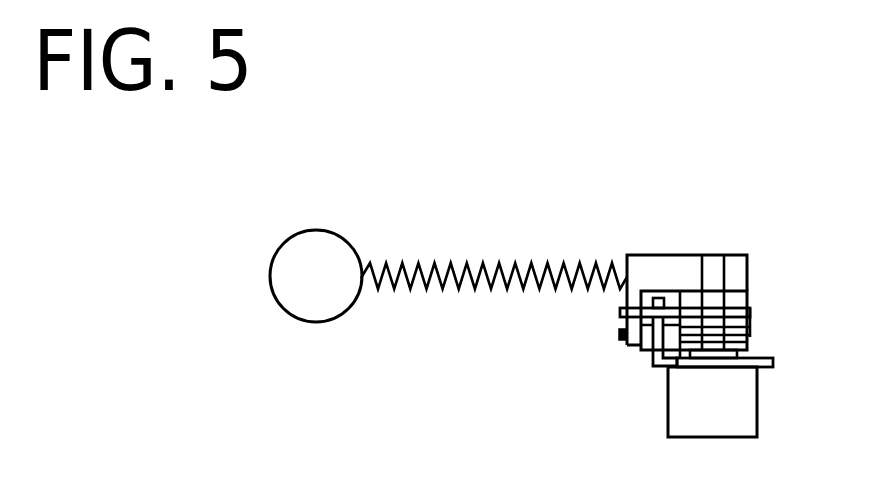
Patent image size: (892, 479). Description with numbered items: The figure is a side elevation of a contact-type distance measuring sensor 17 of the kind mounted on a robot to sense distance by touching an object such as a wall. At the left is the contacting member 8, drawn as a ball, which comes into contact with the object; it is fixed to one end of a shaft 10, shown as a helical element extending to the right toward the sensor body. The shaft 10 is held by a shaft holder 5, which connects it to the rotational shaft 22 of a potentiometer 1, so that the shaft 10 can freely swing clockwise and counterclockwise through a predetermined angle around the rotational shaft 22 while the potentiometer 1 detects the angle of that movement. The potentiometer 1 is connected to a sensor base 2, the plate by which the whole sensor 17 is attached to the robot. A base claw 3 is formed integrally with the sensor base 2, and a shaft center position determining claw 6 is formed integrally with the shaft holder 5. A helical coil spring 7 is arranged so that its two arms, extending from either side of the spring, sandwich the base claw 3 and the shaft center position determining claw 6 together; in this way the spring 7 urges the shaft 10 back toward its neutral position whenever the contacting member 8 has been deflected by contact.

The contact-type distance measuring sensor 17 is at (208, 212).
The contacting member 8 is at (310, 307).
The shaft 10 is at (487, 262).
The shaft holder 5 is at (650, 262).
The rotational shaft 22 is at (708, 250).
The helical coil spring 7 is at (753, 332).
The shaft center position determining claw 6 is at (620, 323).
The base claw 3 is at (652, 352).
The sensor base 2 is at (776, 363).
The potentiometer 1 is at (740, 415).